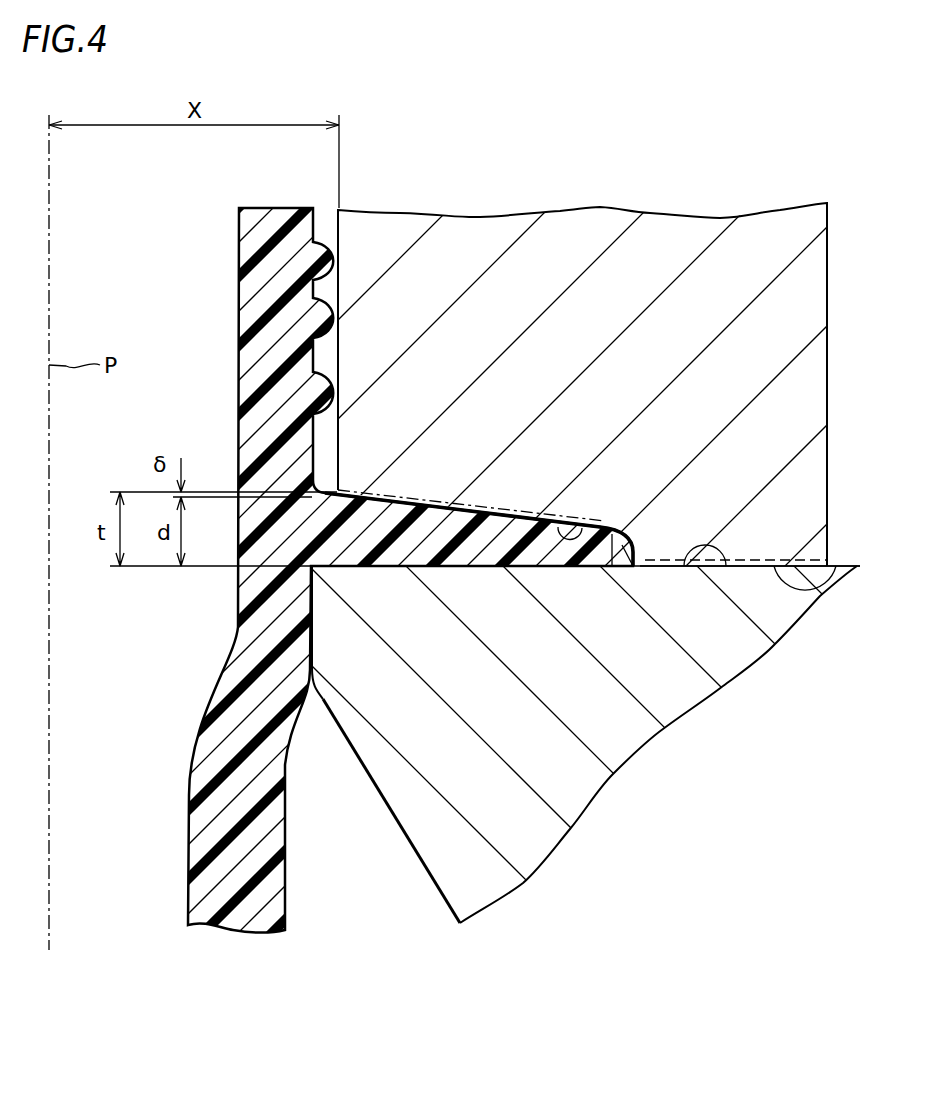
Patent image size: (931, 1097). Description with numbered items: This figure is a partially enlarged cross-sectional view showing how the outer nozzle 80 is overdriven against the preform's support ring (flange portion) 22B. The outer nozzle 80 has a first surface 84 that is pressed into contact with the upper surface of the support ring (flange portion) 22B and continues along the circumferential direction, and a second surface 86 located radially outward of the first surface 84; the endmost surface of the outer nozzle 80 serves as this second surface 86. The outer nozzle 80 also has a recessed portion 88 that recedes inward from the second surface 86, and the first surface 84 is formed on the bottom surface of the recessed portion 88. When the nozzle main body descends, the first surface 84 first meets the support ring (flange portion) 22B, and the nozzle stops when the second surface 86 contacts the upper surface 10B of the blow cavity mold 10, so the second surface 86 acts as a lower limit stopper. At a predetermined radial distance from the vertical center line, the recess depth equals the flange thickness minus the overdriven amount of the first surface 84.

The blow cavity mold 10 is at (407, 804).
The upper surface of the blow cavity mold 10B is at (683, 566).
The support ring (flange portion) 22B is at (323, 257).
The outer nozzle 80 is at (595, 230).
The first surface 84 is at (512, 503).
The second surface 86 is at (760, 560).
The recessed portion 88 is at (625, 567).